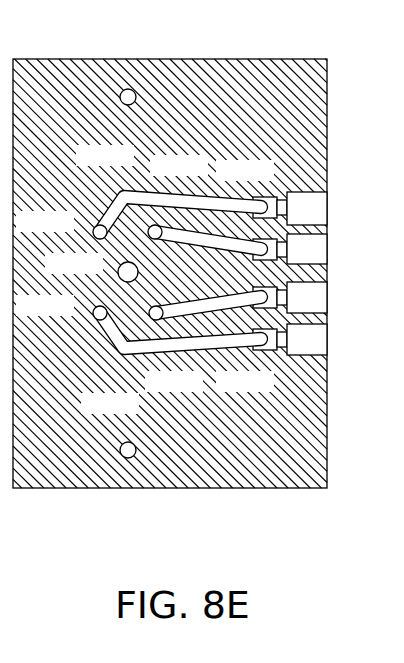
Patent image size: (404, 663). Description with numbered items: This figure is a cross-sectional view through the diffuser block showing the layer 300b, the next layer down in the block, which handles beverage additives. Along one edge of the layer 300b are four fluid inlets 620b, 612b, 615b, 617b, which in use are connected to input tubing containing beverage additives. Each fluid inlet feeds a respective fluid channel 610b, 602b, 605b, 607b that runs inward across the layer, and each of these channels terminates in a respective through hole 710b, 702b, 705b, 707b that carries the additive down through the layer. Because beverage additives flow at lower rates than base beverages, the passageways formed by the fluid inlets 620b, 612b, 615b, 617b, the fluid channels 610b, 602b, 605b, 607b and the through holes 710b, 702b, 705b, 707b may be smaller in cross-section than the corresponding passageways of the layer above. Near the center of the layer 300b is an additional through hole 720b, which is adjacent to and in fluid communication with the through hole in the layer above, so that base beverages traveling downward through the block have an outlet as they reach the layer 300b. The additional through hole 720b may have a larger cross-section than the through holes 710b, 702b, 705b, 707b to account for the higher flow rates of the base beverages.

The layer 300b is at (208, 506).
The fluid channel 610b is at (119, 192).
The fluid channel 602b is at (228, 243).
The fluid channel 605b is at (227, 302).
The fluid channel 607b is at (128, 352).
The through hole 702b is at (156, 231).
The through hole 705b is at (157, 314).
The through hole 707b is at (98, 313).
The through hole 710b is at (97, 231).
The additional through hole 720b is at (127, 271).
The fluid inlet 620b is at (312, 208).
The fluid inlet 612b is at (312, 253).
The fluid inlet 615b is at (312, 296).
The fluid inlet 617b is at (312, 340).